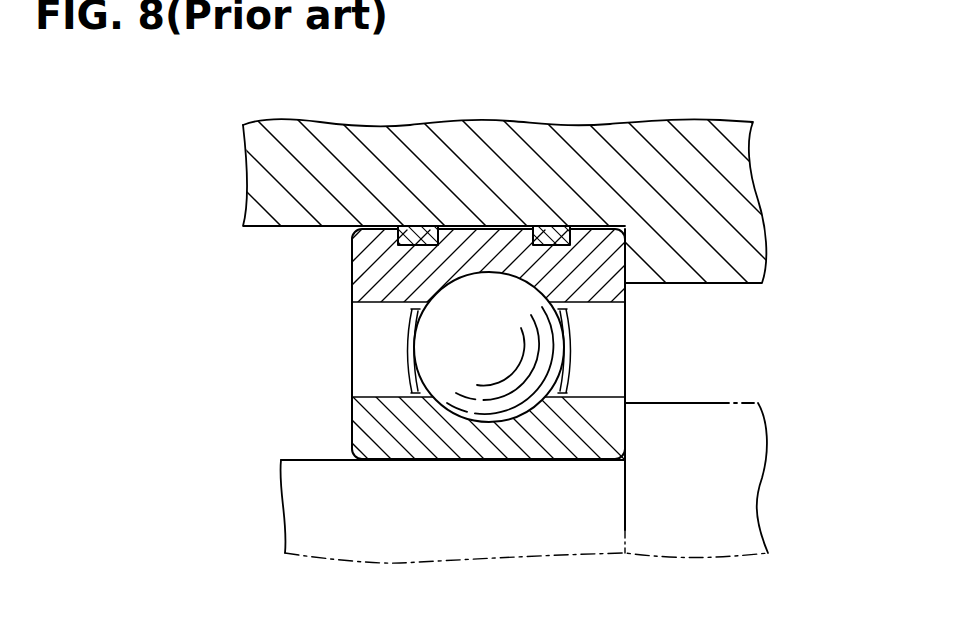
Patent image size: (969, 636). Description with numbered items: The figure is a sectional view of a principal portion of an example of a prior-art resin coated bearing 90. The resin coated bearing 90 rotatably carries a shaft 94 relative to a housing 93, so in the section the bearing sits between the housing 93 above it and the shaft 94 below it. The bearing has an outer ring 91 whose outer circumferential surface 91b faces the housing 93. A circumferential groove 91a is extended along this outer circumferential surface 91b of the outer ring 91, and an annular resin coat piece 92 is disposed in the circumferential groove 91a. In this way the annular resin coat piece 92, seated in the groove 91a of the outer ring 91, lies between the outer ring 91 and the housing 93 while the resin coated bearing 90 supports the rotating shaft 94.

The resin coated bearing 90 is at (640, 312).
The outer ring 91 is at (373, 290).
The circumferential groove 91a is at (413, 226).
The outer circumferential surface 91b is at (377, 226).
The annular resin coat piece 92 is at (545, 226).
The housing 93 is at (289, 138).
The shaft 94 is at (400, 538).